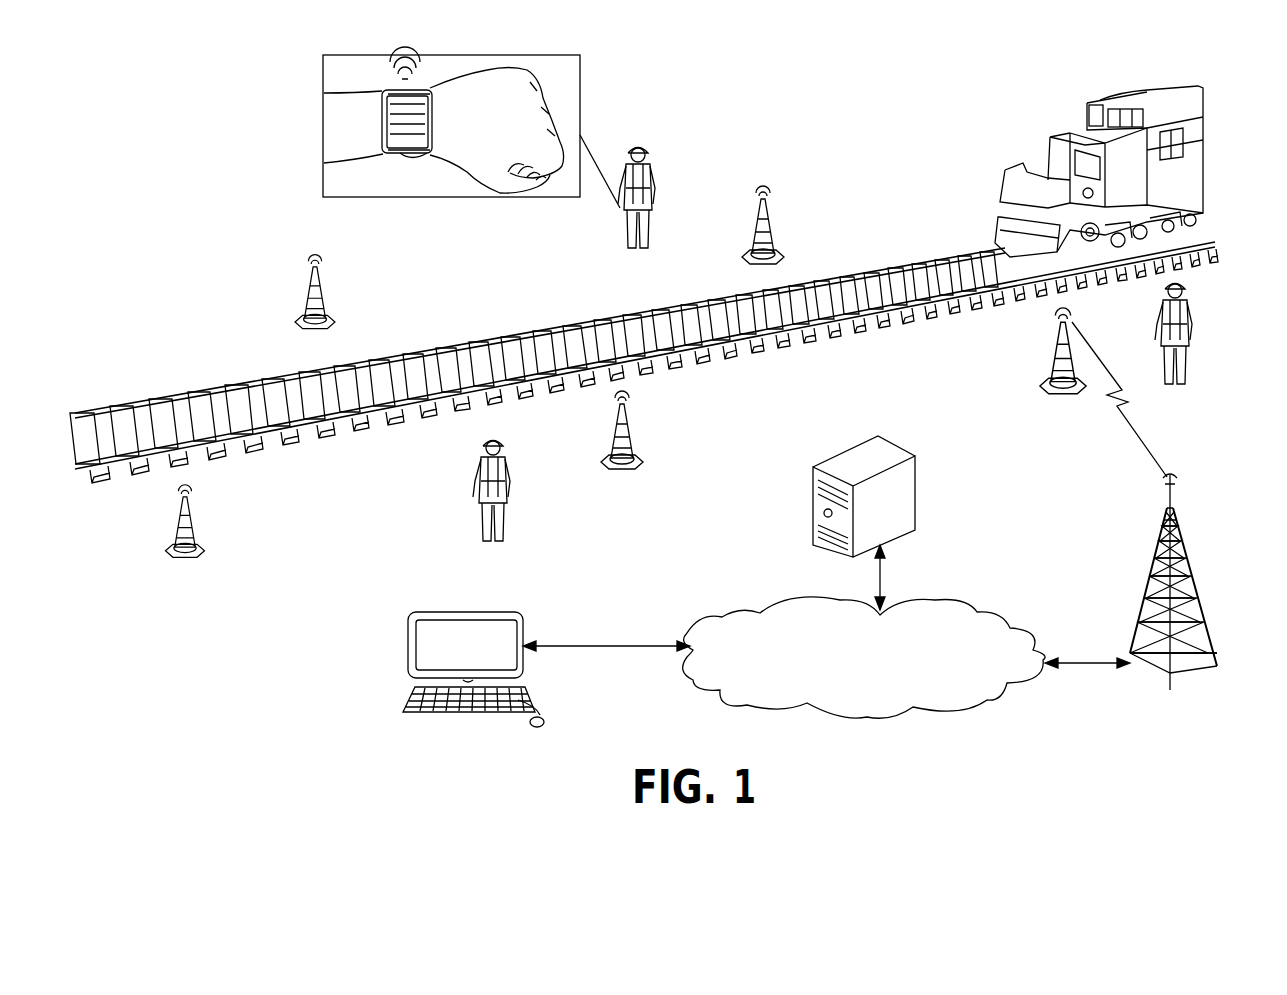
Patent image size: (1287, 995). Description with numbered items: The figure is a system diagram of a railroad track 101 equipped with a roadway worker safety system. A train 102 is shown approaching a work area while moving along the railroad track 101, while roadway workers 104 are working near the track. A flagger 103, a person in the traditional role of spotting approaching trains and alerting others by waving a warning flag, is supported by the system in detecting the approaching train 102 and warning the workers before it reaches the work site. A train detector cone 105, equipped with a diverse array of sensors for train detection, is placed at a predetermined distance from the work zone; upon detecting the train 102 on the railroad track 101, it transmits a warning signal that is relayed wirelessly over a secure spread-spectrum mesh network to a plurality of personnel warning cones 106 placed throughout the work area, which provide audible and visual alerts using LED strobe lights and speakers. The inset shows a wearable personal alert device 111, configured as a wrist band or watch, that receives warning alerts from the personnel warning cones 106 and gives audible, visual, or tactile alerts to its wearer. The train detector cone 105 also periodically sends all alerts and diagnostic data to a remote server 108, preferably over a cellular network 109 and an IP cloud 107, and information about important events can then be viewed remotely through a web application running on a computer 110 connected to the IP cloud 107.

The railroad track 101 is at (480, 340).
The train 102 is at (1105, 95).
The flagger 103 is at (1195, 318).
The roadway workers 104 is at (652, 168).
The train detector cone 105 is at (1074, 337).
The personnel warning cones 106 is at (326, 286).
The IP cloud 107 is at (978, 608).
The remote server 108 is at (888, 440).
The cellular network 109 is at (1180, 535).
The computer 110 is at (525, 614).
The personal alert device 111 is at (422, 88).